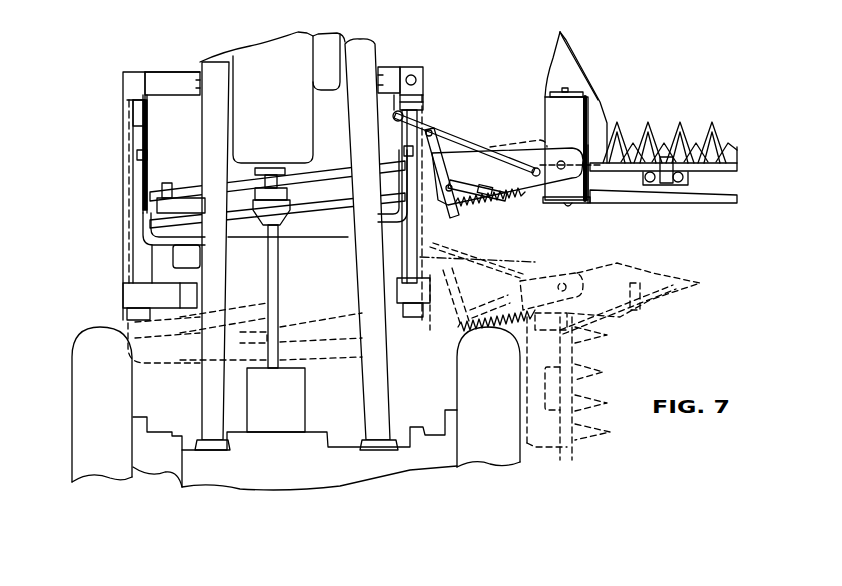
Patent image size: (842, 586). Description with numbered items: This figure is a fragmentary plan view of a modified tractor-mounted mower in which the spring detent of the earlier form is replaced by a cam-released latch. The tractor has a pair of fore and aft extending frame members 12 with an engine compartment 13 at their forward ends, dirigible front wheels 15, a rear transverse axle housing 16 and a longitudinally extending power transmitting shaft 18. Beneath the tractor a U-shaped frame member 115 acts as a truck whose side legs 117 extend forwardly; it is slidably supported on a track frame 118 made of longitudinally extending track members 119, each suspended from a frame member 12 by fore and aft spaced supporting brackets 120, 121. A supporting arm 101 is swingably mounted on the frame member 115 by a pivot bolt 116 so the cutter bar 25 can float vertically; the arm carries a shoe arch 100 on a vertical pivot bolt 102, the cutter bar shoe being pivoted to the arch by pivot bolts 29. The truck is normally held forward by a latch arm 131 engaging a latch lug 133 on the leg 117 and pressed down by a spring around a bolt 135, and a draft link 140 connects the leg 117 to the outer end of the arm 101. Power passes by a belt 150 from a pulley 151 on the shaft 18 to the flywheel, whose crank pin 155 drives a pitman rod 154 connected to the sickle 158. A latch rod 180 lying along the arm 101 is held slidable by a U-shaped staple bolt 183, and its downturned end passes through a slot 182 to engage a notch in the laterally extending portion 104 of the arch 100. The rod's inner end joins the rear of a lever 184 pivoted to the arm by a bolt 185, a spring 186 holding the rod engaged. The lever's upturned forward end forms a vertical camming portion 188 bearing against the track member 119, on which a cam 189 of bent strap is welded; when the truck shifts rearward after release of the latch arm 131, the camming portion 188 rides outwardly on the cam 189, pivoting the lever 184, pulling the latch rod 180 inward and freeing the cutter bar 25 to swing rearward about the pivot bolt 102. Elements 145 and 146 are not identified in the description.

The frame member 12 is at (218, 110).
The engine compartment 13 is at (272, 97).
The front wheel 15 is at (93, 350).
The axle housing 16 is at (295, 429).
The power transmitting shaft 18 is at (273, 298).
The cutter bar 25 is at (681, 192).
The pivot bolt 29 is at (567, 90).
The shoe arch 100 is at (598, 112).
The supporting arm 101 is at (302, 214).
The vertical pivot bolt 102 is at (566, 145).
The laterally inwardly extending portion 104 is at (592, 201).
The U-shaped frame member 115 is at (300, 230).
The pivot bolt 116 is at (262, 246).
The side leg 117 is at (135, 108).
The track frame 118 is at (113, 105).
The track member 119 is at (148, 142).
The supporting bracket 120 is at (168, 82).
The supporting bracket 121 is at (145, 294).
The latch arm 131 is at (420, 90).
The latch lug 133 is at (397, 102).
The bolt 135 is at (413, 77).
The draft link 140 is at (440, 135).
The stop 145 is at (147, 156).
The conduit 146 is at (145, 282).
The belt 150 is at (238, 203).
The pulley 151 is at (282, 194).
The pitman rod 154 is at (283, 186).
The crank pin 155 is at (168, 192).
The sickle 158 is at (707, 172).
The latch rod 180 is at (488, 198).
The slot 182 is at (531, 200).
The U-shaped staple bolt 183 is at (490, 200).
The lever 184 is at (440, 208).
The bolt 185 is at (452, 203).
The spring 186 is at (494, 207).
The vertical camming portion 188 is at (404, 117).
The cam 189 is at (450, 140).